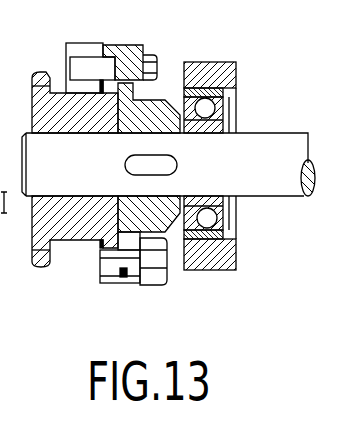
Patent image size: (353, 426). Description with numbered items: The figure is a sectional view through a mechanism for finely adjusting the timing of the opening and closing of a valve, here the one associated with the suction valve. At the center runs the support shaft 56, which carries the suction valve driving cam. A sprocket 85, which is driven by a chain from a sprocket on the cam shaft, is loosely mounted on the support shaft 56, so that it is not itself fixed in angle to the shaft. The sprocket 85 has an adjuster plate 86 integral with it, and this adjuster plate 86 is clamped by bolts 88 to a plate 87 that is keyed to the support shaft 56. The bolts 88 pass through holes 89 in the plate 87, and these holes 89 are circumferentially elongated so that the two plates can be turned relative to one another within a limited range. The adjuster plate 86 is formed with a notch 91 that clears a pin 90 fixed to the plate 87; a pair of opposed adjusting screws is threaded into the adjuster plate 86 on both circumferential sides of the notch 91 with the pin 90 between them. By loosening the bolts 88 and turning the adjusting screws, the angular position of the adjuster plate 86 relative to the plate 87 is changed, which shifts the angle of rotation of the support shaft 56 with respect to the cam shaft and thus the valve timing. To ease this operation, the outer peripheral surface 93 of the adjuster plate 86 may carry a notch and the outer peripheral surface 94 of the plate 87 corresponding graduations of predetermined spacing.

The support shaft 56 is at (258, 132).
The sprocket 85 is at (37, 73).
The adjuster plate 86 is at (104, 244).
The plate 87 is at (129, 45).
The bolts 88 is at (168, 270).
The holes 89 is at (122, 273).
The pin 90 is at (82, 63).
The notch 91 is at (113, 42).
The outer peripheral surface 93 is at (112, 284).
The outer peripheral surface 94 is at (121, 283).